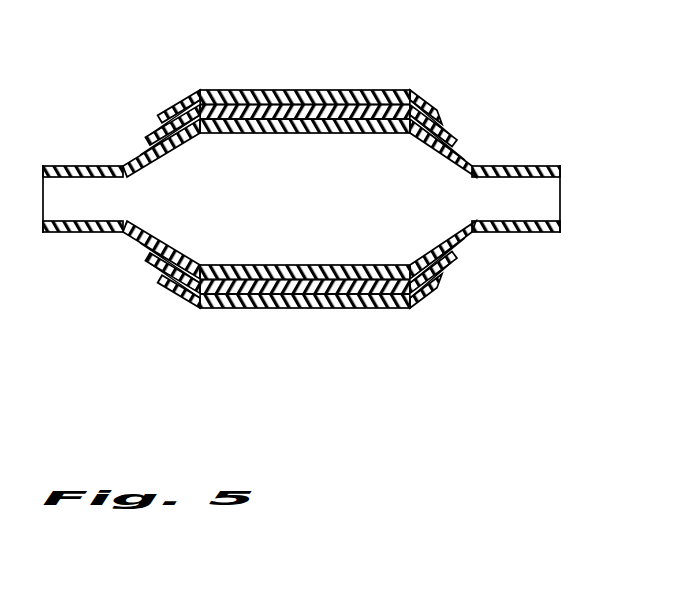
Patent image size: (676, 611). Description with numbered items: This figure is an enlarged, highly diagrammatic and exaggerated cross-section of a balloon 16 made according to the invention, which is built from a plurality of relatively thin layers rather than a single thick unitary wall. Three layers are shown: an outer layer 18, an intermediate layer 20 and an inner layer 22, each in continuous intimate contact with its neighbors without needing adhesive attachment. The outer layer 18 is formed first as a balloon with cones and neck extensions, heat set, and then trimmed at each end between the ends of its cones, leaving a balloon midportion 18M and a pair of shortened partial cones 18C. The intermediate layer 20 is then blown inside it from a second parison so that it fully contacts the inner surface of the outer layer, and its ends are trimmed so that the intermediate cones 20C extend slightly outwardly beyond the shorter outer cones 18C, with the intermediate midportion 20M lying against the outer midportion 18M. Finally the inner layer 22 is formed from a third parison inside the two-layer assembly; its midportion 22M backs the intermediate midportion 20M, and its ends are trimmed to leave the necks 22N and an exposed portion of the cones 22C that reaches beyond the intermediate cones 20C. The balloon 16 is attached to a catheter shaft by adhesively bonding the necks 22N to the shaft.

The balloon 16 is at (195, 346).
The outer layer 18 is at (315, 82).
The intermediate layer 20 is at (358, 103).
The inner layer 22 is at (388, 116).
The necks 22N is at (88, 165).
The cones 22C is at (172, 152).
The midportion of inner layer 22M is at (293, 134).
The midportion of intermediate layer 20M is at (288, 270).
The intermediate cones 20C is at (143, 264).
The balloon midportion 18M is at (293, 309).
The partial cones 18C is at (173, 297).